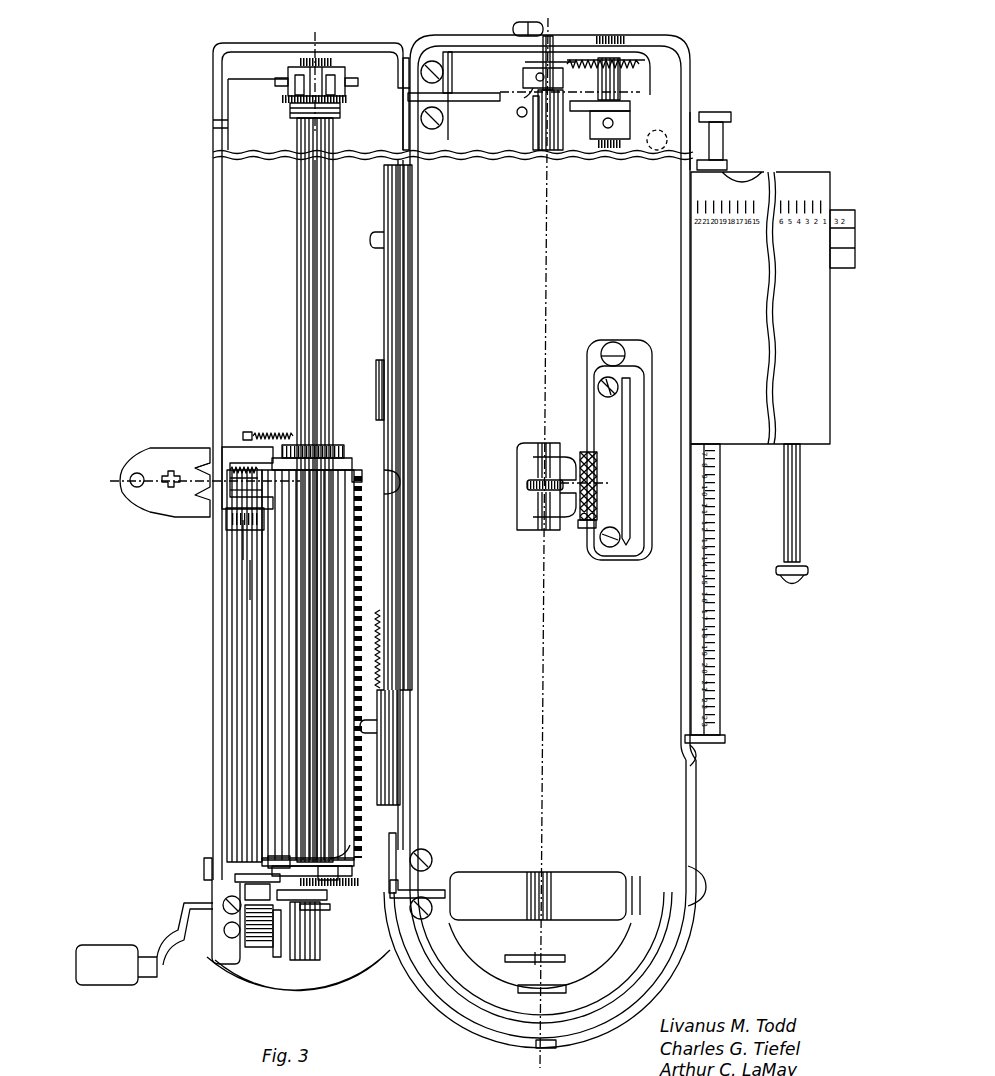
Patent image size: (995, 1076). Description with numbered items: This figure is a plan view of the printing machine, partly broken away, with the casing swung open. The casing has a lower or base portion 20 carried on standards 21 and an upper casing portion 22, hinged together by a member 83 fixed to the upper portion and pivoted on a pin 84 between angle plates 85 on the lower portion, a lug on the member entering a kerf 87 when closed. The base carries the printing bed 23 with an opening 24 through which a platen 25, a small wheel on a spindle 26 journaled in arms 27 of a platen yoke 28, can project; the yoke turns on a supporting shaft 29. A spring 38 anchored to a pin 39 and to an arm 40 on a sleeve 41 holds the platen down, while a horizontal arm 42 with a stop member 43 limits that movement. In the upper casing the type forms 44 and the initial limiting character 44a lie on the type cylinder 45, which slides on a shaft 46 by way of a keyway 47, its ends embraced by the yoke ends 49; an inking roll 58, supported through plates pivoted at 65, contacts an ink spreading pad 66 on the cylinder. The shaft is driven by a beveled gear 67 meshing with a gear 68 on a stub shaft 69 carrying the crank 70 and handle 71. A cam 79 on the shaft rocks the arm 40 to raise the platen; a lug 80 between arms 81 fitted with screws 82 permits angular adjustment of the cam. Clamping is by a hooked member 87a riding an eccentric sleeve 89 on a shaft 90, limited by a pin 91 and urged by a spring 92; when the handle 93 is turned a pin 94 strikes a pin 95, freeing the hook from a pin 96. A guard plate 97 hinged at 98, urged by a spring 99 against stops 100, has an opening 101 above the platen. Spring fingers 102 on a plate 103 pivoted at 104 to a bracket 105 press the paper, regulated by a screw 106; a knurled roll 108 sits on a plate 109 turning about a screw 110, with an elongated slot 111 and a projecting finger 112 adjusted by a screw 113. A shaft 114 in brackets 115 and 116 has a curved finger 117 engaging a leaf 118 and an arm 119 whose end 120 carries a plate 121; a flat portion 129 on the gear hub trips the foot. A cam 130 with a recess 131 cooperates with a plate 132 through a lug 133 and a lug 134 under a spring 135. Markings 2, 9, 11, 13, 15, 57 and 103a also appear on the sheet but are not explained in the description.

The section line 2- 2 is at (735, 64).
The section line 9-9 / screw 9 is at (395, 852).
The section line 11- 11 is at (384, 896).
The bracket 13 is at (700, 100).
The frame 15 is at (530, 93).
The lower or base portion 20 is at (735, 819).
The standards 21 is at (702, 878).
The upper casing portion 22 is at (232, 290).
The printing bed 23 is at (550, 463).
The opening 24 is at (520, 525).
The platen 25 is at (530, 487).
The spindle 26 is at (536, 472).
The arms 27 is at (535, 460).
The platen yoke 28 is at (597, 475).
The supporting shaft 29 is at (622, 85).
The spring 38 is at (566, 112).
The pin 39 is at (521, 117).
The arm 40 is at (630, 105).
The sleeve 41 is at (621, 124).
The horizontal arm 42 is at (612, 148).
The stop member 43 is at (657, 150).
The type forms 44 is at (362, 520).
The initial limiting character 44a is at (375, 480).
The type cylinder 45 is at (352, 463).
The shaft 46 is at (348, 340).
The keyway 47 is at (315, 302).
The ends 49 is at (350, 848).
The axis 57 is at (328, 116).
The inking roll 58 is at (240, 688).
The pivot 65 is at (258, 432).
The ink spreading pad 66 is at (292, 727).
The beveled gear 67 is at (323, 910).
The gear 68 is at (276, 955).
The stub shaft 69 is at (245, 940).
The crank 70 is at (180, 963).
The handle 71 is at (115, 985).
The cam 79 is at (300, 101).
The lug 80 is at (296, 112).
The arms 81 is at (335, 90).
The screws 82 is at (284, 80).
The hinge member 83 is at (392, 846).
The pin 84 is at (443, 120).
The angle plates 85 is at (443, 74).
The kerf 87 is at (470, 101).
The hooked member 87a is at (548, 960).
The eccentric sleeve 89 is at (563, 78).
The shaft 90 is at (563, 137).
The pin 91 is at (556, 60).
The spring 92 is at (645, 67).
The handle 93 is at (528, 18).
The pin 94 is at (297, 965).
The pin 95 is at (522, 92).
The pin 96 is at (305, 58).
The guard plate 97 is at (408, 333).
The hinge 98 is at (376, 380).
The spring 99 is at (366, 649).
The stops 100 is at (365, 734).
The opening 101 is at (404, 480).
The spring fingers 102 is at (268, 447).
The pressure foot plate 103 is at (175, 452).
The cross slot 103a is at (160, 490).
The pivot 104 is at (200, 460).
The bracket 105 is at (210, 508).
The screw 106 is at (134, 473).
The knurled roll 108 is at (580, 525).
The plate 109 is at (619, 450).
The screw 110 is at (604, 545).
The elongated slot 111 is at (618, 380).
The projecting finger 112 is at (620, 352).
The screw 113 is at (610, 342).
The shaft 114 is at (250, 575).
The bracket 115 is at (243, 540).
The bracket 116 is at (226, 910).
The curved finger 117 is at (248, 501).
The leaf 118 is at (231, 469).
The arm 119 is at (240, 884).
The end 120 is at (327, 908).
The plate 121 is at (398, 888).
The flat portion 129 is at (327, 898).
The cam 130 is at (290, 845).
The recess 131 is at (295, 855).
The plate 132 is at (320, 875).
The lug 133 is at (265, 858).
The lug 134 is at (267, 890).
The spring 135 is at (207, 869).